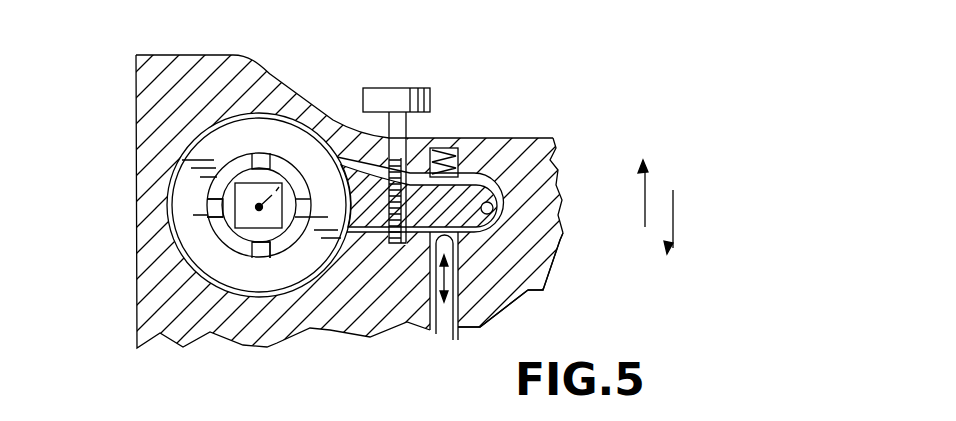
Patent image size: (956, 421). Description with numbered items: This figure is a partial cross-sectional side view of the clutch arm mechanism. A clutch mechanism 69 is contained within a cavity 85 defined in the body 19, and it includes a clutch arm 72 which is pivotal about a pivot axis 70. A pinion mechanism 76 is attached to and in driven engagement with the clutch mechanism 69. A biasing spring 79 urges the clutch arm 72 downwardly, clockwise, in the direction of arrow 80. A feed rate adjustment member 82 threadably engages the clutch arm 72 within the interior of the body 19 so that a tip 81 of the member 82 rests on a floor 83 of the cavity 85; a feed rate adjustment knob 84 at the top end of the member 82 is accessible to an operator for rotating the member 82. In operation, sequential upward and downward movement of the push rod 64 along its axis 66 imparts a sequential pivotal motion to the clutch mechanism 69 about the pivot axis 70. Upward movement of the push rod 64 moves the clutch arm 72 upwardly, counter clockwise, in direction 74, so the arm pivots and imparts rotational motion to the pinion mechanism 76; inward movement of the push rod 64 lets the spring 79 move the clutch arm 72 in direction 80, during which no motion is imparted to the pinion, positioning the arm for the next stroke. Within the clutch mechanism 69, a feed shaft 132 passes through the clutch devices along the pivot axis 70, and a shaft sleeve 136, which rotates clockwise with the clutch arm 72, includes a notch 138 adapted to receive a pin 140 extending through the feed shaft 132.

The body 19 is at (183, 63).
The clutch mechanism 69 is at (329, 88).
The pivot axis 70 is at (285, 168).
The clutch arm 72 is at (553, 171).
The direction 74 is at (647, 190).
The pinion mechanism 76 is at (238, 137).
The biasing spring 79 is at (442, 146).
The arrow 80 is at (673, 220).
The tip 81 is at (390, 243).
The feed rate adjustment member 82 is at (412, 124).
The floor 83 is at (480, 257).
The feed rate adjustment knob 84 is at (400, 87).
The cavity 85 is at (505, 214).
The push rod 64 is at (443, 330).
The axis 66 is at (470, 300).
The feed shaft 132 is at (273, 215).
The shaft sleeve 136 is at (232, 240).
The notch 138 is at (215, 222).
The pin 140 is at (207, 206).